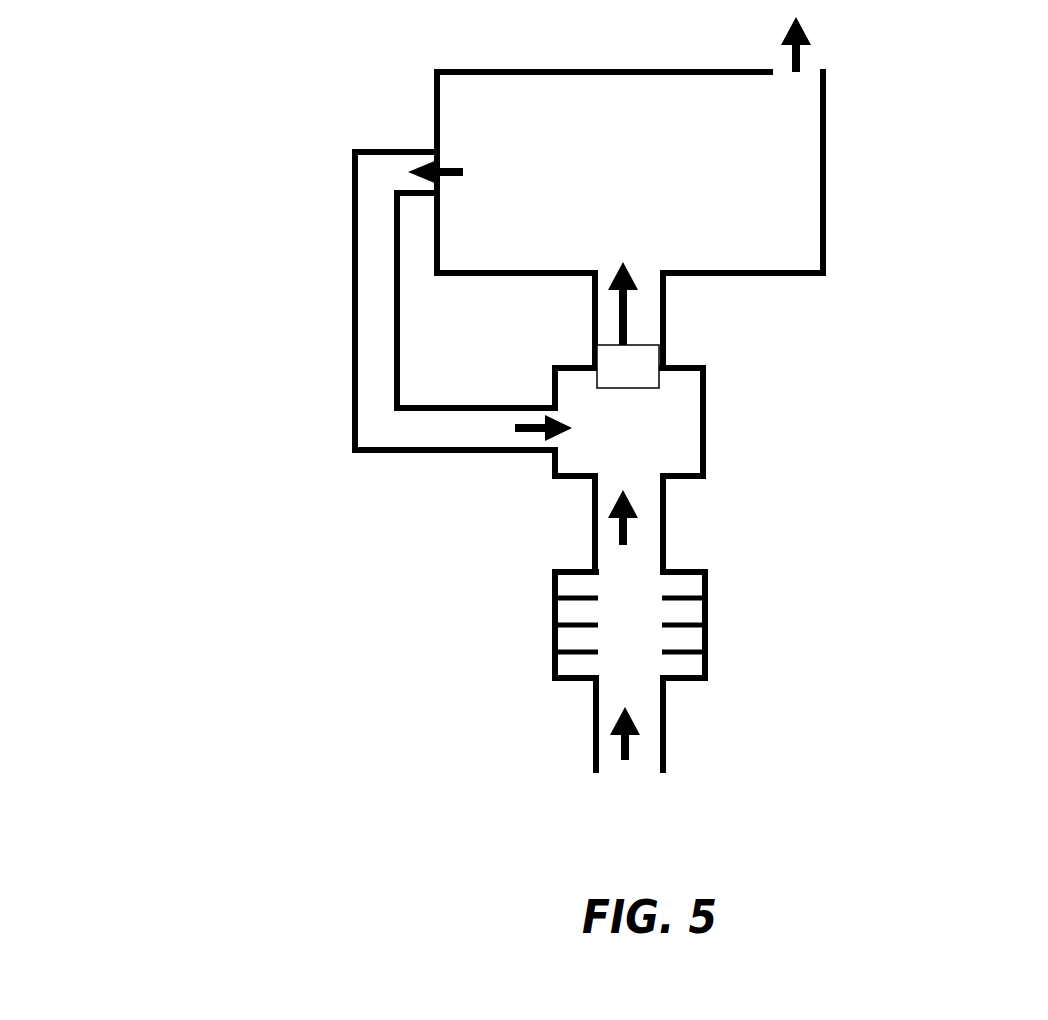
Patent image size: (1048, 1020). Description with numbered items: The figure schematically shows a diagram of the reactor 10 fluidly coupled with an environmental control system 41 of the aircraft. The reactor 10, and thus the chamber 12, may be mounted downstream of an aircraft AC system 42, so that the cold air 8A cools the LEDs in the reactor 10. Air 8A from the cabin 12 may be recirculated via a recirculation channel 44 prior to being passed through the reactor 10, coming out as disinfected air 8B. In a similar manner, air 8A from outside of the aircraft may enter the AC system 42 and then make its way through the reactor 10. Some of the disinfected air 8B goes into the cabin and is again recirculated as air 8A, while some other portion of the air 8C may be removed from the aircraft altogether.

The air 8A is at (810, 815).
The disinfected air 8B is at (633, 328).
The air portion removed from aircraft 8C is at (810, 58).
The reactor 10 is at (628, 366).
The chamber 12 is at (630, 172).
The environmental control system 41 is at (262, 527).
The aircraft AC system 42 is at (530, 638).
The recirculation channel 44 is at (341, 314).